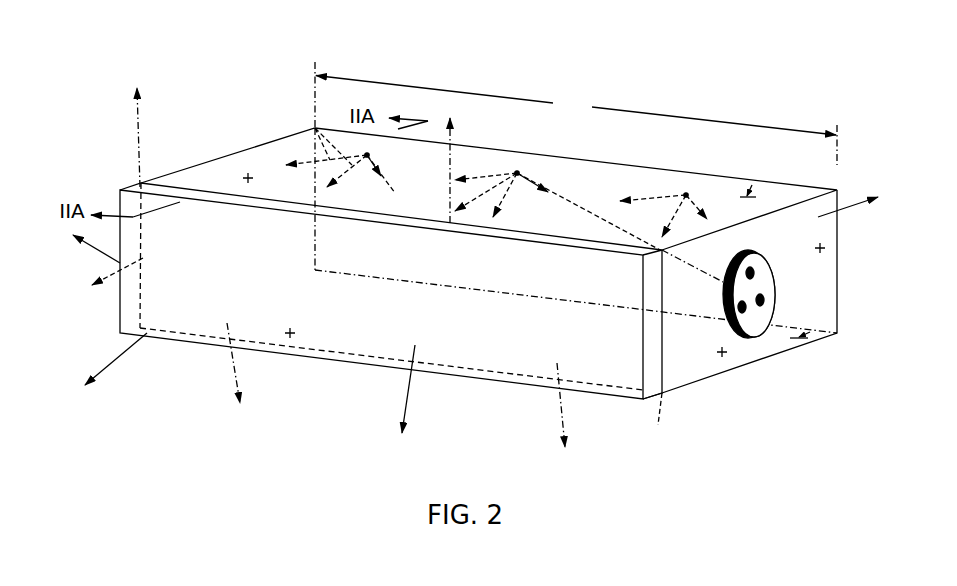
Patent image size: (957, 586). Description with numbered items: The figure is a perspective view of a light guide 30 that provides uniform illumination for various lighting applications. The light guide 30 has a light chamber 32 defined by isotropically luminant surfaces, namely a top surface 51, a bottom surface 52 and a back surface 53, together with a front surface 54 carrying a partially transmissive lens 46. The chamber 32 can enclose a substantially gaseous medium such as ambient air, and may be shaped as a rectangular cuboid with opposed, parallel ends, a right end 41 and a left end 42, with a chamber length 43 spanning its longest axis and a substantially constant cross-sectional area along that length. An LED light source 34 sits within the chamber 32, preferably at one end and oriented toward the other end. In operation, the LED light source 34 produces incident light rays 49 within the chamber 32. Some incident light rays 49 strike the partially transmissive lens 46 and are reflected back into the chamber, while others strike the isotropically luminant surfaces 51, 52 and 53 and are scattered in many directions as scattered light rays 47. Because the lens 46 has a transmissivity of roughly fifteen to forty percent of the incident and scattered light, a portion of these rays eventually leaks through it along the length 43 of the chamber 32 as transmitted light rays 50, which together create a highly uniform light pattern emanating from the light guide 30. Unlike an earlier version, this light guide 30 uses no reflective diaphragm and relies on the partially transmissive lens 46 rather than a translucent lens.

The light guide 30 is at (182, 78).
The light chamber 32 is at (808, 196).
The LED light source 34 is at (748, 323).
The right end 41 is at (725, 354).
The left end 42 is at (240, 178).
The chamber length 43 is at (576, 113).
The partially transmissive lens 46 is at (622, 390).
The scattered light rays 47 is at (313, 128).
The incident light rays 49 is at (737, 253).
The transmitted light rays 50 is at (452, 160).
The isotropically luminant top surface 51 is at (749, 192).
The isotropically luminant bottom surface 52 is at (804, 344).
The isotropically luminant back surface 53 is at (826, 246).
The front surface 54 is at (288, 333).